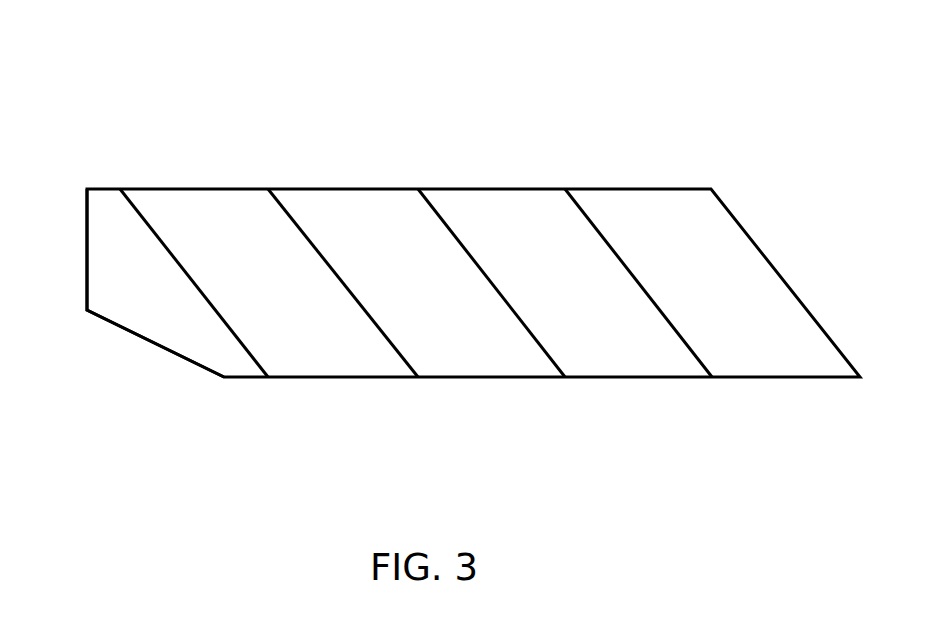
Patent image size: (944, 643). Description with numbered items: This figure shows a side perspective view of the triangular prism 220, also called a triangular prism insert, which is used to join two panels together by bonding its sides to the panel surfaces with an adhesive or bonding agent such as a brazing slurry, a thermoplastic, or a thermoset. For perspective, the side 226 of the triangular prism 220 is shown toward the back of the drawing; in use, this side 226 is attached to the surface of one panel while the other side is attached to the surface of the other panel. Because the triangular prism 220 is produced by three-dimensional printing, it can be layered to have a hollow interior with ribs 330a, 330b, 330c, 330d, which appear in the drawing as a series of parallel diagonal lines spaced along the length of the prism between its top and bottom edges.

The triangular prism 220 is at (157, 80).
The side 226 is at (87, 259).
The rib 330a is at (168, 247).
The rib 330b is at (317, 247).
The rib 330c is at (464, 247).
The rib 330d is at (612, 247).